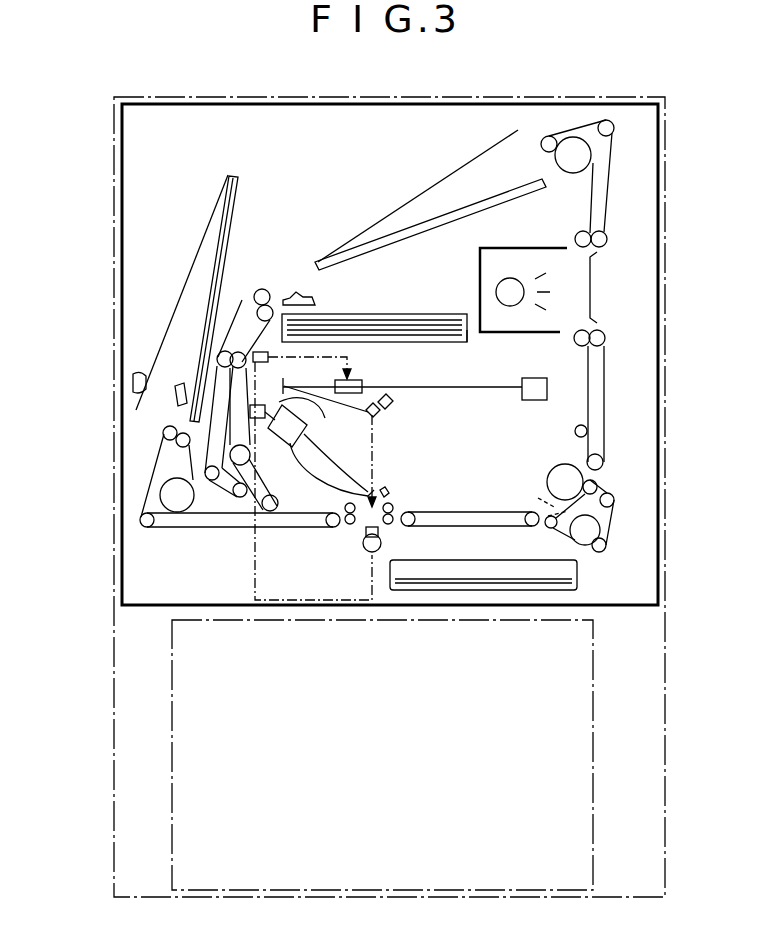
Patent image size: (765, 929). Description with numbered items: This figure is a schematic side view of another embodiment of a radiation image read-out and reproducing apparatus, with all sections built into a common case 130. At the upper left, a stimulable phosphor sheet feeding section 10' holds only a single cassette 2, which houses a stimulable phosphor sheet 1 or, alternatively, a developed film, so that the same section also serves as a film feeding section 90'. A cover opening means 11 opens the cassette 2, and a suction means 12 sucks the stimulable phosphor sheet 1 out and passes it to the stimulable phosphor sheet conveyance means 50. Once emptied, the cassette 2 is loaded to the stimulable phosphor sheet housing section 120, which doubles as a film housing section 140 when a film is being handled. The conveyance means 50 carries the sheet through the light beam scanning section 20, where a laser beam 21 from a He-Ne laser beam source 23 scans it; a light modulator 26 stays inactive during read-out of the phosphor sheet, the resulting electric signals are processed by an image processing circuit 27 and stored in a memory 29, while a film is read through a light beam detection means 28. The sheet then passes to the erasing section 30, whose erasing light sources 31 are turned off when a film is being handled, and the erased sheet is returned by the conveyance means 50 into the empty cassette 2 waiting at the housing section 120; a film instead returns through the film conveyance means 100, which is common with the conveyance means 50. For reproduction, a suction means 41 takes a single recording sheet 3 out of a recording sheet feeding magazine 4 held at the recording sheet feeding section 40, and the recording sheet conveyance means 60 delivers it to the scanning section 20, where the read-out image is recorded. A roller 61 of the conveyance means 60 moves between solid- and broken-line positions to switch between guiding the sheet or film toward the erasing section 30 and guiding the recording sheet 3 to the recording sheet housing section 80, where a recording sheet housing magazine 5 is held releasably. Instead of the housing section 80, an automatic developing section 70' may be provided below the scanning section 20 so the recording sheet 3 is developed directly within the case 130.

The stimulable phosphor sheet 1 is at (218, 212).
The cassette 2 is at (238, 206).
The recording sheet 3 is at (428, 316).
The recording sheet feeding magazine 4 is at (465, 345).
The recording sheet housing magazine 5 is at (542, 592).
The stimulable phosphor sheet feeding section 10' is at (88, 267).
The film feeding section 90' is at (88, 267).
The cover opening means 11 is at (133, 393).
The suction means 12 is at (180, 383).
The light beam scanning section 20 is at (406, 453).
The laser beam 21 is at (441, 387).
The He-Ne laser beam source 23 is at (535, 400).
The light modulator 26 is at (363, 379).
The image processing circuit 27 is at (321, 441).
The light beam detection means 28 is at (384, 542).
The memory 29 is at (257, 342).
The erasing section 30 is at (480, 276).
The erasing light source 31 is at (517, 278).
The recording sheet feeding section 40 is at (379, 302).
The suction means 41 is at (314, 298).
The stimulable phosphor sheet conveyance means 50 is at (603, 188).
The recording sheet conveyance means 60 is at (247, 288).
The roller 61 is at (550, 538).
The automatic developing section 70' is at (382, 755).
The recording sheet housing section 80 is at (584, 570).
The film conveyance means 100 is at (604, 408).
The stimulable phosphor sheet housing section 120 is at (418, 188).
The film housing section 140 is at (448, 168).
The case 130 is at (665, 773).